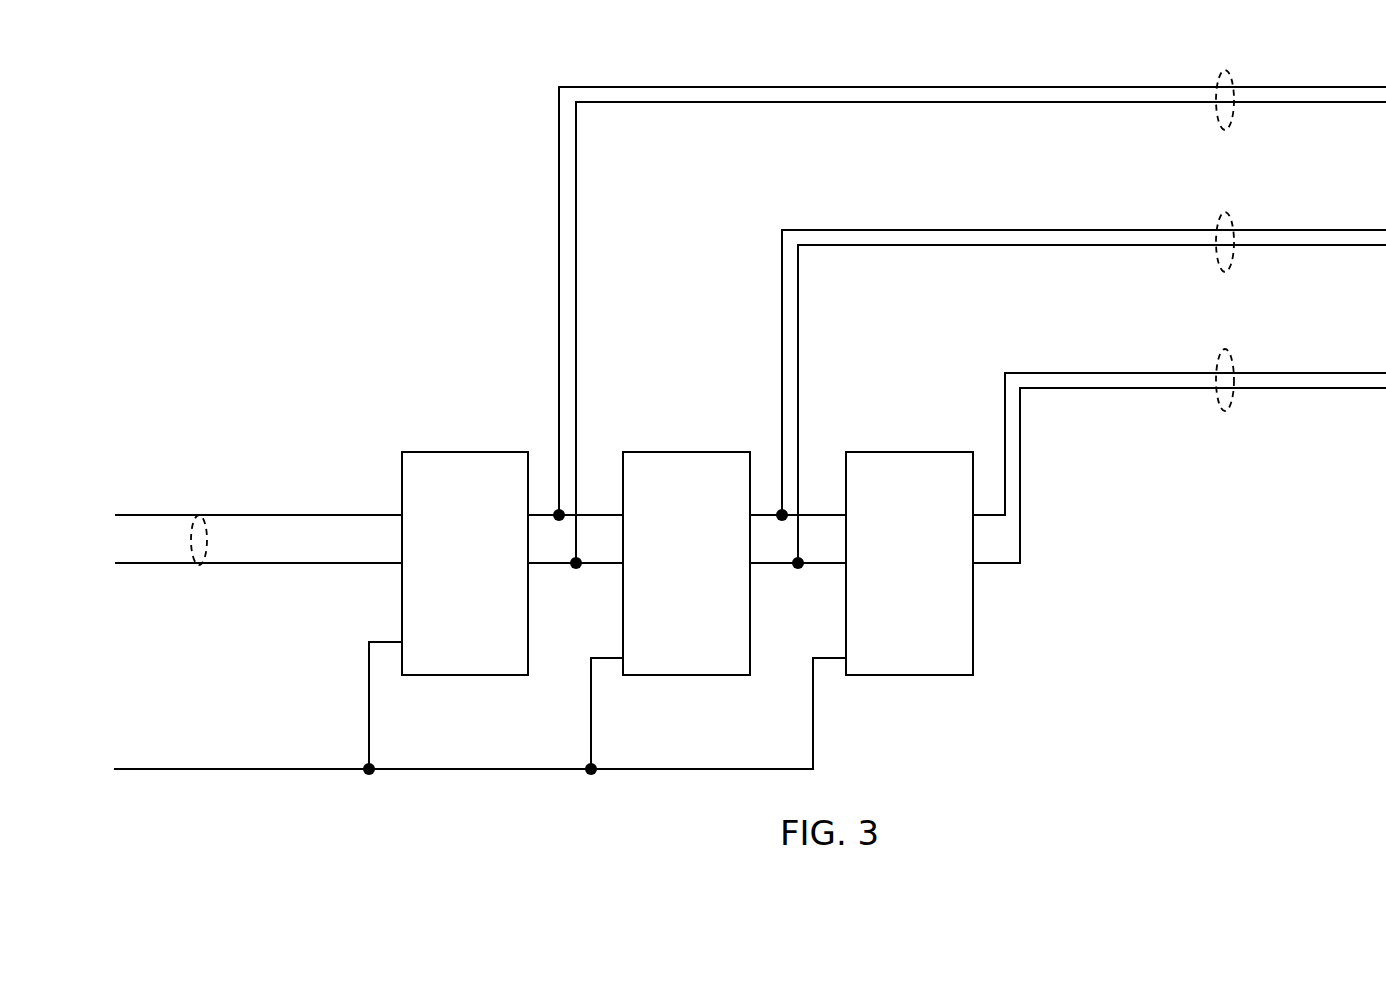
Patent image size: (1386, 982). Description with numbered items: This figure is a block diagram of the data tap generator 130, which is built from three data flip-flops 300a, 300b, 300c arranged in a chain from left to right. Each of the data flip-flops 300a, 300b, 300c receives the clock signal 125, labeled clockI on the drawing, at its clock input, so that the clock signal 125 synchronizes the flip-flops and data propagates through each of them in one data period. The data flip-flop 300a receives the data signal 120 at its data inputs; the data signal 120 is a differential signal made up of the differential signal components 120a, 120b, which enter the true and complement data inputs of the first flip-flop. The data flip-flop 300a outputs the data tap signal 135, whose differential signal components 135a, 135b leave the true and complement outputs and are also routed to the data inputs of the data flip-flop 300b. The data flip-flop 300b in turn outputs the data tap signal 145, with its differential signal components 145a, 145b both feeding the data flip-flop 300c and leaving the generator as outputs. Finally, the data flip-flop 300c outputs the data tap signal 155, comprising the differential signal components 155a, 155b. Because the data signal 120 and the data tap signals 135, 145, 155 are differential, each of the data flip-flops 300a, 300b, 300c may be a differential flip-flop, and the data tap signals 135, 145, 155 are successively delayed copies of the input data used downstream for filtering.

The data tap generator 130 is at (194, 118).
The data signal 120 is at (207, 512).
The differential signal component 120a is at (337, 515).
The differential signal component 120b is at (337, 563).
The clock signal 125 is at (195, 768).
The data flip-flop 300a is at (440, 491).
The data flip-flop 300b is at (661, 491).
The data flip-flop 300c is at (884, 491).
The data tap signal 135 is at (1232, 75).
The differential signal component 135a is at (1128, 87).
The differential signal component 135b is at (1127, 102).
The data tap signal 145 is at (1232, 218).
The differential signal component 145a is at (1128, 230).
The differential signal component 145b is at (1127, 245).
The data tap signal 155 is at (1232, 359).
The differential signal component 155a is at (1128, 373).
The differential signal component 155b is at (1127, 388).